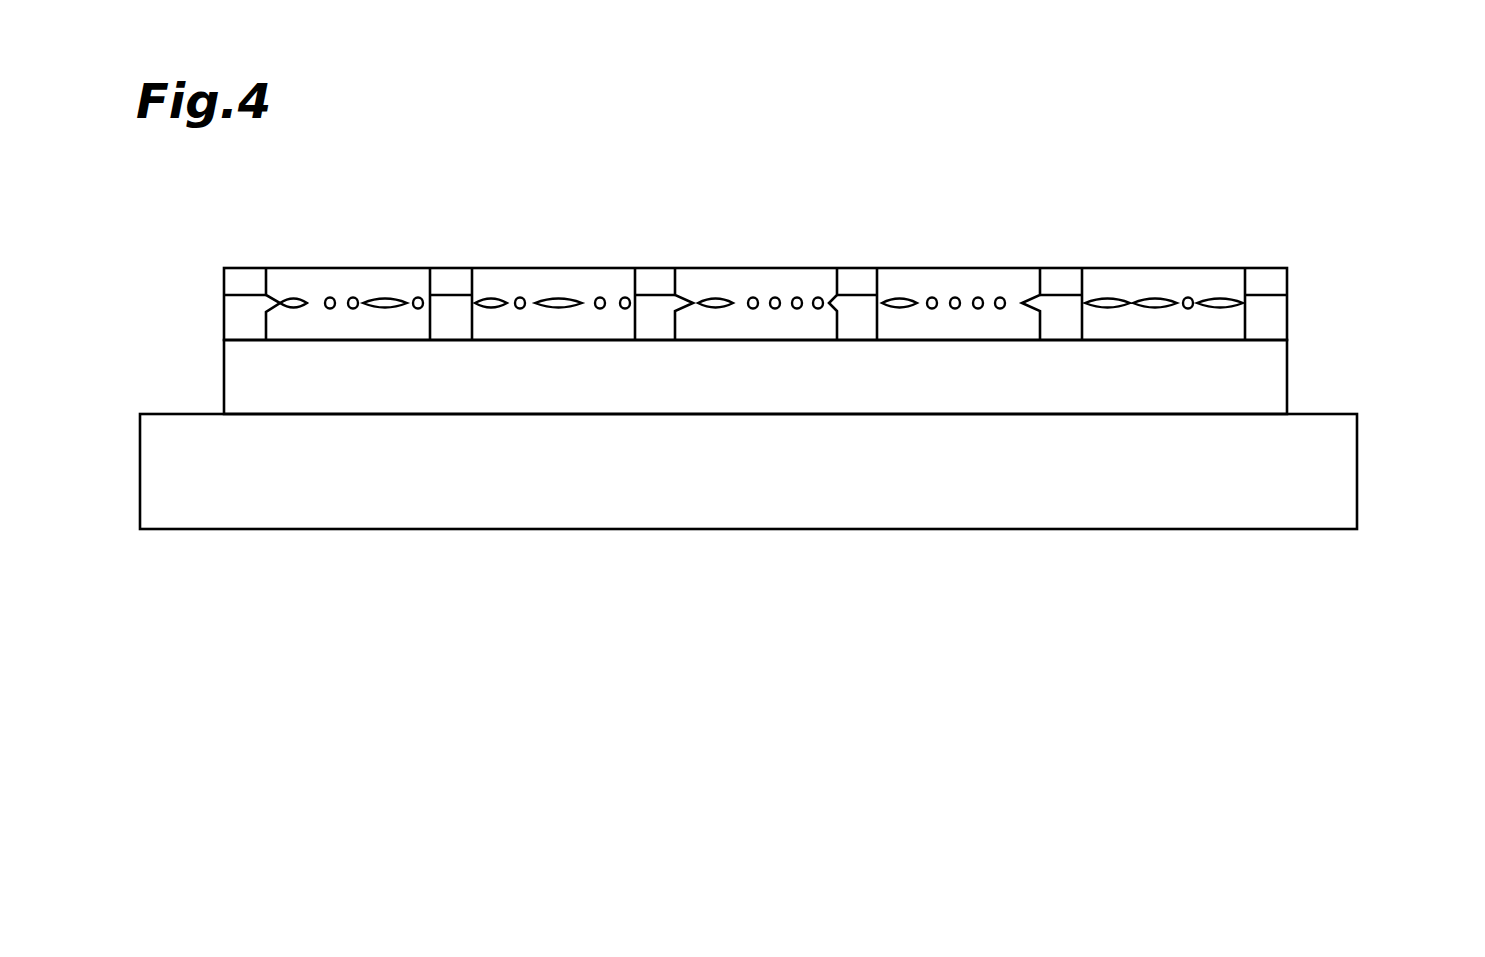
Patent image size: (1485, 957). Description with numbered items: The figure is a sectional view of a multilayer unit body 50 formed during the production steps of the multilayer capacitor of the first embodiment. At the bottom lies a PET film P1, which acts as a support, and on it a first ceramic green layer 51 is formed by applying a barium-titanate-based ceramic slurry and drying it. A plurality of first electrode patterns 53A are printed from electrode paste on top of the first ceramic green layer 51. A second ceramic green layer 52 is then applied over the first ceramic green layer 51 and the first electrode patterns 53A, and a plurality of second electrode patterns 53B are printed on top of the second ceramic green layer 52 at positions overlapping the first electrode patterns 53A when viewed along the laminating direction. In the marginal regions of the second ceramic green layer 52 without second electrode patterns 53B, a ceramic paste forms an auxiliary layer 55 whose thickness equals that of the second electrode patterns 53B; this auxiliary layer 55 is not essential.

The multilayer unit body 50 is at (835, 299).
The first ceramic green layer 51 is at (1280, 370).
The second ceramic green layer 52 is at (1280, 318).
The first electrode patterns 53A is at (855, 275).
The second electrode patterns 53B is at (1213, 283).
The auxiliary layer 55 is at (1280, 282).
The PET film P1 is at (1337, 468).